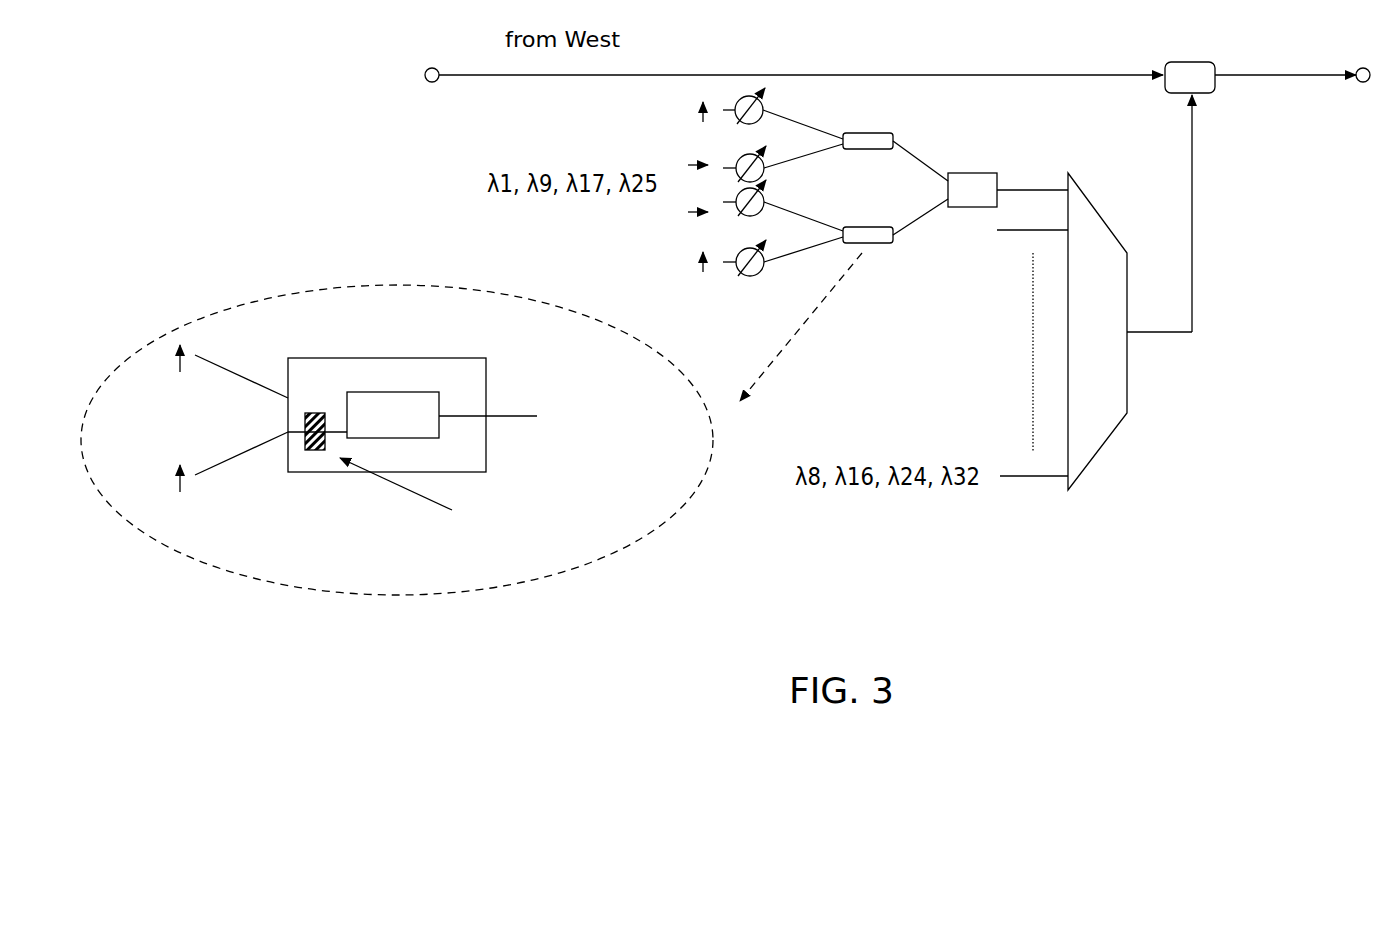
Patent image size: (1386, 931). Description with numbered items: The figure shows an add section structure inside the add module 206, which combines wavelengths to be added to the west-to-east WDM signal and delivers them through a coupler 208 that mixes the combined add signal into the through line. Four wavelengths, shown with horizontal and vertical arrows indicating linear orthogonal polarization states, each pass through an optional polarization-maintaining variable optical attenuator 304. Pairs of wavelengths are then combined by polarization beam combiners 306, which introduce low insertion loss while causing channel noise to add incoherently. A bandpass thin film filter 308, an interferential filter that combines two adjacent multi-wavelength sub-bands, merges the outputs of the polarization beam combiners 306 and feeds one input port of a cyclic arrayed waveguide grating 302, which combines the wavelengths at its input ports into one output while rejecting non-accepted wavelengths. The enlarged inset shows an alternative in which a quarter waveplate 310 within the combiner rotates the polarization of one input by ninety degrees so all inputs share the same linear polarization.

The add module 206 is at (1070, 648).
The coupler 208 is at (1203, 67).
The cyclic arrayed waveguide grating 302 is at (1088, 222).
The variable optical attenuator 304 is at (765, 108).
The polarization beam combiner 306 is at (895, 139).
The bandpass thin film filter 308 is at (1000, 193).
The quarter waveplate 310 is at (308, 465).